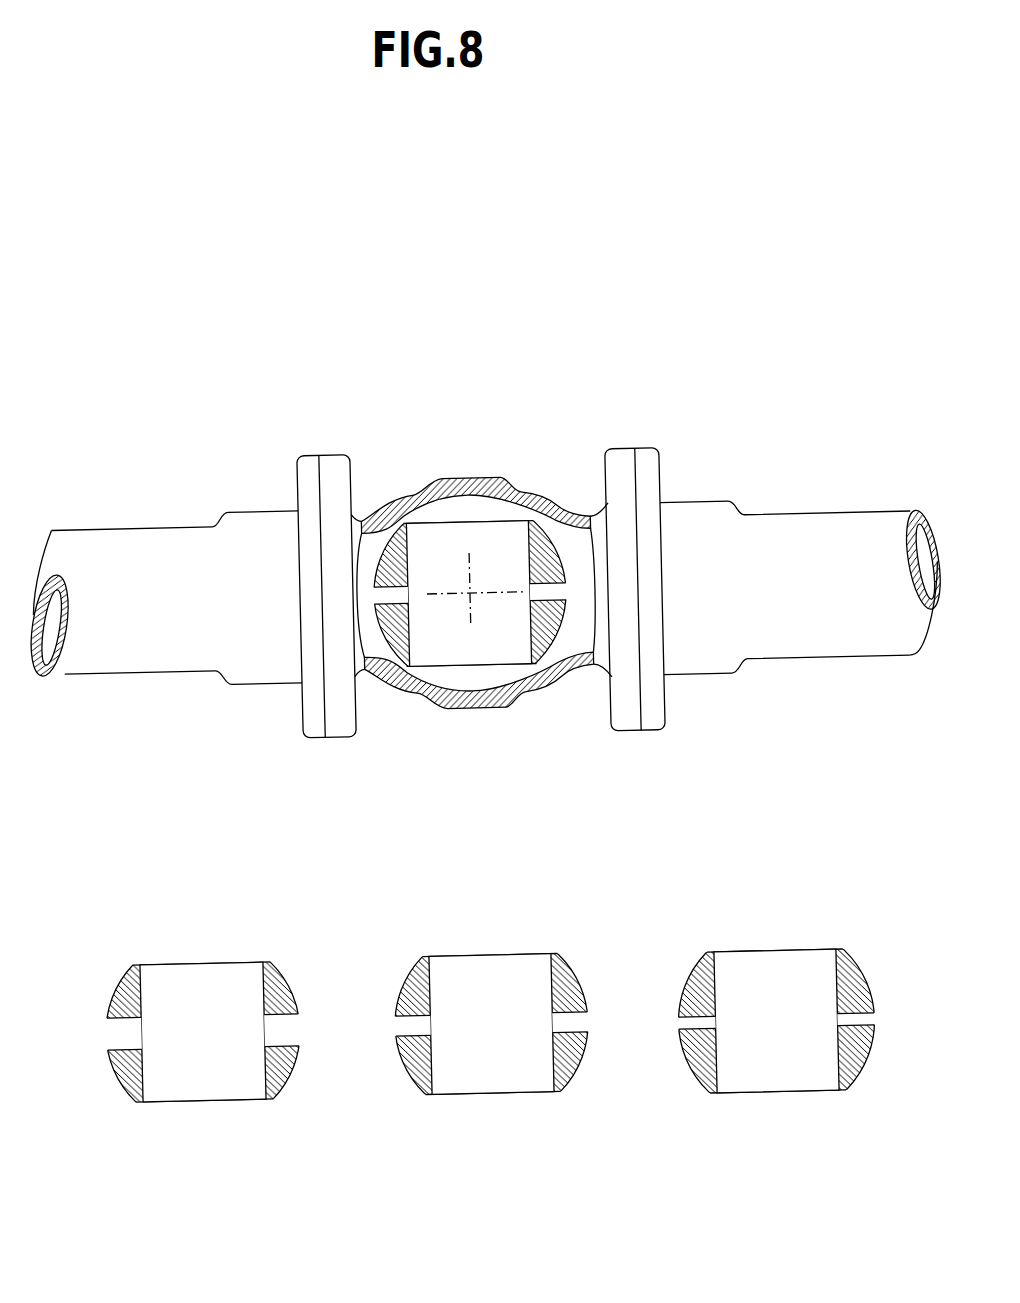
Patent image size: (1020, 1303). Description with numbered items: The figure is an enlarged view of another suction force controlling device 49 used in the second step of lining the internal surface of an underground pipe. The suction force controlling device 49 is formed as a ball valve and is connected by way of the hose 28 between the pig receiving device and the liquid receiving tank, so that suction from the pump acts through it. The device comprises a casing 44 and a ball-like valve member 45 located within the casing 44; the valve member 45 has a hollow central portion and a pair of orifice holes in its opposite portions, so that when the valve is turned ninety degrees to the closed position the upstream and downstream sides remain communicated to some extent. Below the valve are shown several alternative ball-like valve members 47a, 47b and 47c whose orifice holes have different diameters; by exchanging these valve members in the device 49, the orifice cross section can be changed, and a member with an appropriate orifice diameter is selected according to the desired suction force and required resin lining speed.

The hose 28 is at (110, 667).
The casing 44 is at (508, 483).
The ball-like valve member 45 is at (402, 540).
The ball-like valve member 47a is at (130, 988).
The ball-like valve member 47b is at (410, 980).
The ball-like valve member 47c is at (705, 977).
The suction force controlling device 49 is at (472, 406).